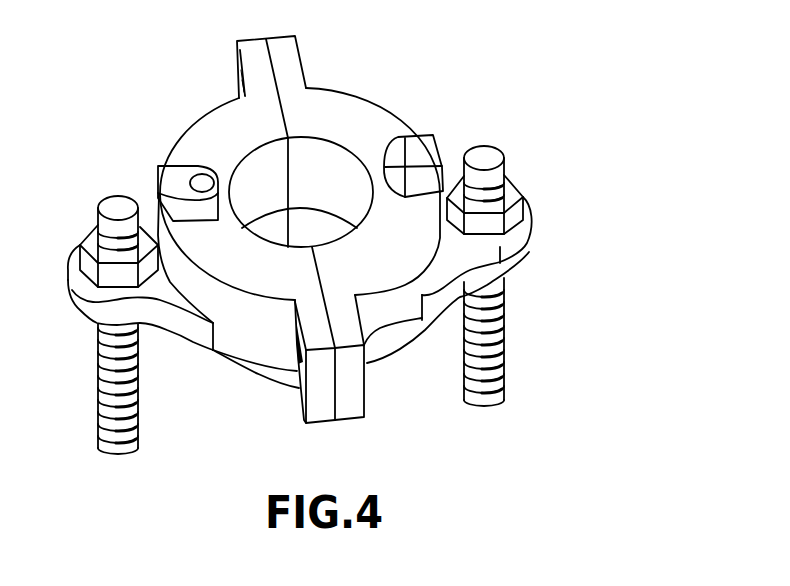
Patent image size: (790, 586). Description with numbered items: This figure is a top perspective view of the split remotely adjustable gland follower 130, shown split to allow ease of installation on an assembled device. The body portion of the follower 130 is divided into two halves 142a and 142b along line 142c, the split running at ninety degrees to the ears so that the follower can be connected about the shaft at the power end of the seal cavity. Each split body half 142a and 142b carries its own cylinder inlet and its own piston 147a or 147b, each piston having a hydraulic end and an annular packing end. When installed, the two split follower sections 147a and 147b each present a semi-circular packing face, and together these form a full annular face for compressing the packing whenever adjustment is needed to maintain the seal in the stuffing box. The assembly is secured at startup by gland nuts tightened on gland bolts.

The remotely adjustable gland follower 130 is at (337, 240).
The body half 142a is at (360, 113).
The body half 142b is at (233, 120).
The split line 142c is at (273, 70).
The piston 147a is at (367, 362).
The piston 147b is at (256, 368).